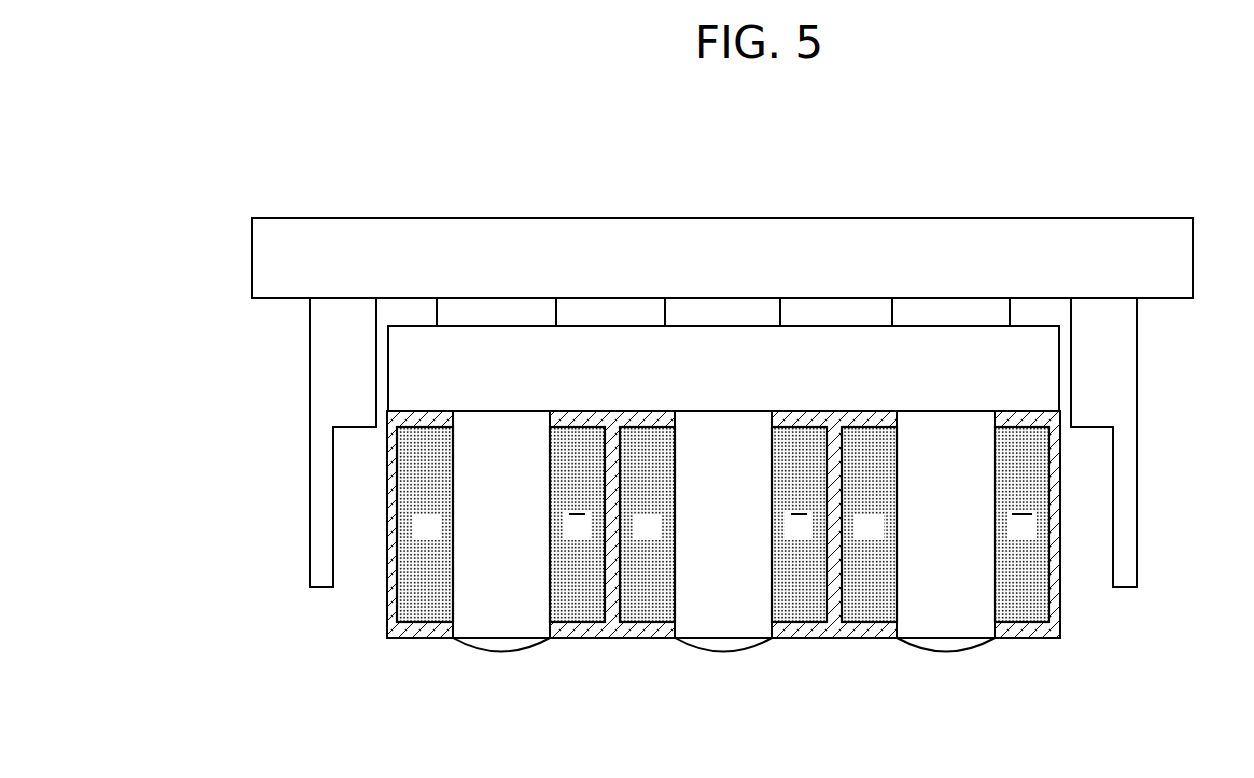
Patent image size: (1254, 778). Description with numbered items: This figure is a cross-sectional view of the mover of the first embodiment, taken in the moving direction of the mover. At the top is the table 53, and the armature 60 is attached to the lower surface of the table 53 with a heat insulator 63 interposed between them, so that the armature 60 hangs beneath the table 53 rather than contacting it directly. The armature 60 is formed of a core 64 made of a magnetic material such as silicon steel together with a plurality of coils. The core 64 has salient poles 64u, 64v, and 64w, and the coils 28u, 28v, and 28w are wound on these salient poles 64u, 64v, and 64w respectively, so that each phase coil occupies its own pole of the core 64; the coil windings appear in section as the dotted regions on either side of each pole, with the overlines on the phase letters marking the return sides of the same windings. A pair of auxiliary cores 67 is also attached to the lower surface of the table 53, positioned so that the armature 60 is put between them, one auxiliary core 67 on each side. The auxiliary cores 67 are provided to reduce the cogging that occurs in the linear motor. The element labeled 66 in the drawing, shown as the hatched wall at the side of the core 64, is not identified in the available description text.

The table 53 is at (747, 255).
The armature 60 is at (872, 316).
The heat insulator 63 is at (980, 311).
The core 64 is at (806, 489).
The insulator 66 is at (1062, 517).
The auxiliary core 67 is at (322, 423).
The salient pole 64u is at (508, 618).
The salient pole 64v is at (700, 608).
The salient pole 64w is at (952, 608).
The coil 28u is at (577, 622).
The coil 28v is at (795, 622).
The coil 28w is at (1025, 622).